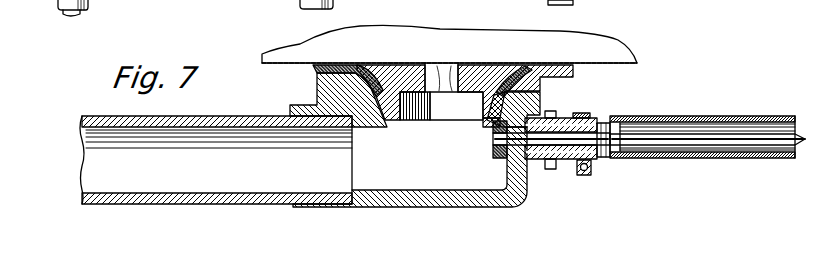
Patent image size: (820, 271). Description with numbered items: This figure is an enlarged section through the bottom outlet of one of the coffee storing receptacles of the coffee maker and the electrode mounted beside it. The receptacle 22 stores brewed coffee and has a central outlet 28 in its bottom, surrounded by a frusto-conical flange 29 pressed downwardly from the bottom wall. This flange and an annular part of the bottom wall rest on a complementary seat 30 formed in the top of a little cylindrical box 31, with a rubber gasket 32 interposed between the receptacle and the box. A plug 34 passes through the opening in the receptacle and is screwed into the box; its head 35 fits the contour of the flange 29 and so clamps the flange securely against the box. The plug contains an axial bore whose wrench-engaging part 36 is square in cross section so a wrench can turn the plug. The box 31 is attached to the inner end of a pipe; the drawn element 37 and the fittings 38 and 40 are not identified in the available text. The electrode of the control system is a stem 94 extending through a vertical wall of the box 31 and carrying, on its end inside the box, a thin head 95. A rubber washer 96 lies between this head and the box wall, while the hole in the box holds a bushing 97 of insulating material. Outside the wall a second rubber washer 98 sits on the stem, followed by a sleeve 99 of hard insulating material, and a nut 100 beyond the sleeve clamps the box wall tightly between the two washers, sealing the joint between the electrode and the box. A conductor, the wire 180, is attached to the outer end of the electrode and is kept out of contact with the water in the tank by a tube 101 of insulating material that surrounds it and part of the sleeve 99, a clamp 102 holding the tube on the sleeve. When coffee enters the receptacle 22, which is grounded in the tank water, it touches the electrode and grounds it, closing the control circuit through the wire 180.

The receptacle 22 is at (300, 52).
The outlet 28 is at (512, 58).
The frusto-conical flange 29 is at (378, 64).
The seat 30 is at (372, 128).
The box 31 is at (440, 181).
The rubber gasket 32 is at (334, 63).
The plug 34 is at (393, 121).
The head 35 is at (433, 66).
The wrench-engaging part 36 is at (453, 72).
The tube 37 is at (229, 116).
The fitting 38 is at (70, 17).
The fitting 40 is at (334, 7).
The stem 94 is at (527, 146).
The head 95 is at (496, 126).
The rubber washer 96 is at (496, 152).
The bushing 97 is at (506, 159).
The second rubber washer 98 is at (570, 116).
The sleeve 99 is at (587, 114).
The nut 100 is at (606, 160).
The tube 101 is at (754, 117).
The clamp 102 is at (585, 176).
The wire 180 is at (687, 133).